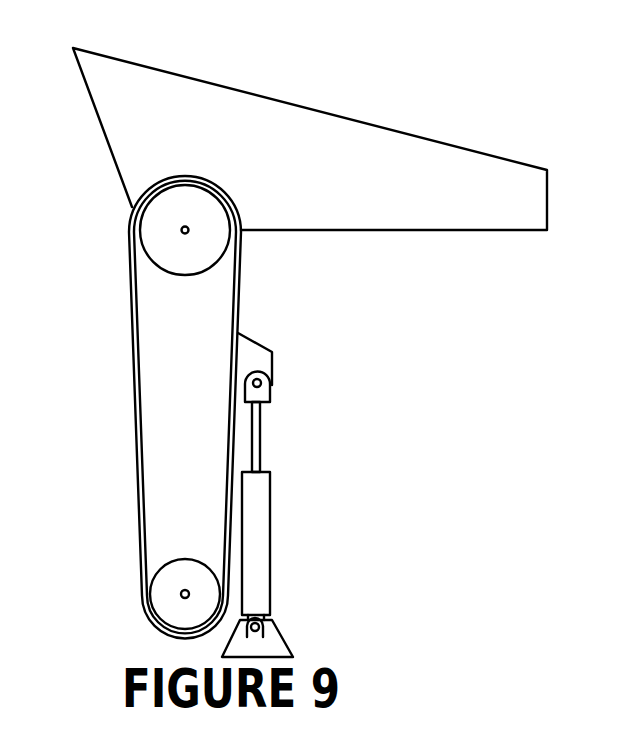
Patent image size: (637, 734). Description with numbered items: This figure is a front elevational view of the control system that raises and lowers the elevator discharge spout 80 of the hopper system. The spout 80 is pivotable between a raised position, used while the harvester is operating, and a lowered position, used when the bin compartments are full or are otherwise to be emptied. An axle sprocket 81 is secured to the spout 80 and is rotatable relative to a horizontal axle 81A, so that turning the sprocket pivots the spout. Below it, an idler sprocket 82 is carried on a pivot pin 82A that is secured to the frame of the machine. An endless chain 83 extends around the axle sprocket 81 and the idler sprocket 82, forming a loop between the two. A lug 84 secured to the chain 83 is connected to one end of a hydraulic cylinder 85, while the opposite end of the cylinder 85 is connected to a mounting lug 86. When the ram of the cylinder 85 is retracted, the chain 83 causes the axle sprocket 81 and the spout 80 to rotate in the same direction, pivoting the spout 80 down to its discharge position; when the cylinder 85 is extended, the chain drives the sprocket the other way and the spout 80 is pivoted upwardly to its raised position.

The discharge spout 80 is at (380, 127).
The axle sprocket 81 is at (170, 276).
The horizontal axle 81A is at (181, 230).
The idler sprocket 82 is at (173, 573).
The pivot pin 82A is at (181, 595).
The endless chain 83 is at (136, 393).
The lug 84 is at (257, 357).
The hydraulic cylinder 85 is at (270, 488).
The mounting lug 86 is at (270, 643).